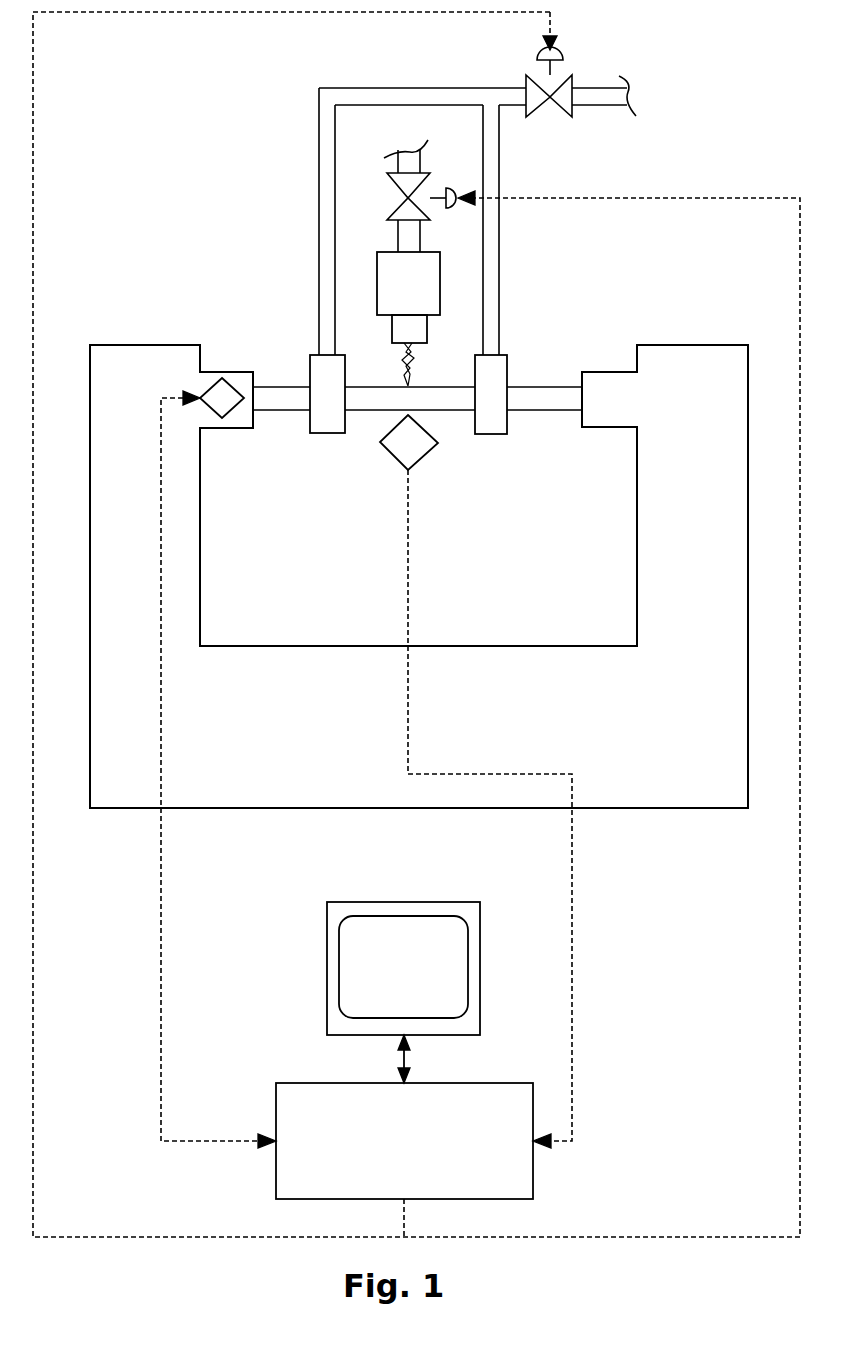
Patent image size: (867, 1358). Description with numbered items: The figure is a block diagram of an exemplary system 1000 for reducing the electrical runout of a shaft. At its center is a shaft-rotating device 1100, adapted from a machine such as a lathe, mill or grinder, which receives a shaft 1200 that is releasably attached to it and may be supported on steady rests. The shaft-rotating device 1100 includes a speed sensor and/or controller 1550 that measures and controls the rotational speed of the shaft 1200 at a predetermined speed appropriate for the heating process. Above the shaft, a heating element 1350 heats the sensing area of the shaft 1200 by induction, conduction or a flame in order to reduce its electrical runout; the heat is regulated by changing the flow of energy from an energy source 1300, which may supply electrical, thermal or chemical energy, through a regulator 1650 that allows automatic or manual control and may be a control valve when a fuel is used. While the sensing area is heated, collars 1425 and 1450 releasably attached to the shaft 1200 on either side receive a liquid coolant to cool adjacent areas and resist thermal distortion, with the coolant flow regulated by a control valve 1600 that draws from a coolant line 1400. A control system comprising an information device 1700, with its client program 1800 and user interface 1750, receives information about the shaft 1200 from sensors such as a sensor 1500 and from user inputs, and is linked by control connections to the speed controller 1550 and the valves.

The system 1000 is at (783, 37).
The shaft-rotating device 1100 is at (419, 576).
The shaft 1200 is at (559, 410).
The energy source 1300 is at (407, 143).
The heating element 1350 is at (408, 303).
The outlet pipe 1400 is at (630, 96).
The collar 1425 is at (489, 434).
The collar 1450 is at (327, 433).
The sensor 1500 is at (388, 453).
The speed sensor and/or controller 1550 is at (209, 756).
The control valve 1600 is at (552, 90).
The regulator 1650 is at (410, 196).
The information device 1700 is at (404, 1160).
The user interface 1750 is at (403, 992).
The client program 1800 is at (405, 1113).